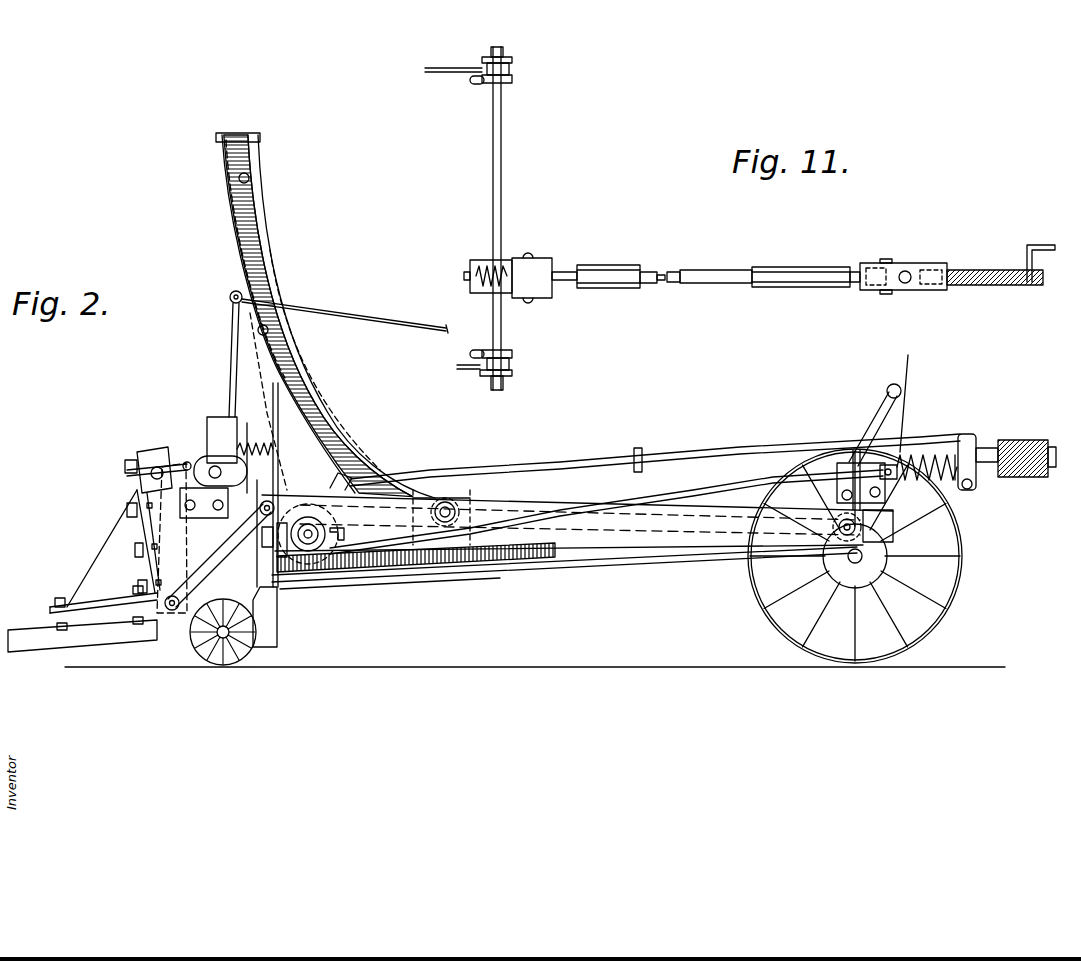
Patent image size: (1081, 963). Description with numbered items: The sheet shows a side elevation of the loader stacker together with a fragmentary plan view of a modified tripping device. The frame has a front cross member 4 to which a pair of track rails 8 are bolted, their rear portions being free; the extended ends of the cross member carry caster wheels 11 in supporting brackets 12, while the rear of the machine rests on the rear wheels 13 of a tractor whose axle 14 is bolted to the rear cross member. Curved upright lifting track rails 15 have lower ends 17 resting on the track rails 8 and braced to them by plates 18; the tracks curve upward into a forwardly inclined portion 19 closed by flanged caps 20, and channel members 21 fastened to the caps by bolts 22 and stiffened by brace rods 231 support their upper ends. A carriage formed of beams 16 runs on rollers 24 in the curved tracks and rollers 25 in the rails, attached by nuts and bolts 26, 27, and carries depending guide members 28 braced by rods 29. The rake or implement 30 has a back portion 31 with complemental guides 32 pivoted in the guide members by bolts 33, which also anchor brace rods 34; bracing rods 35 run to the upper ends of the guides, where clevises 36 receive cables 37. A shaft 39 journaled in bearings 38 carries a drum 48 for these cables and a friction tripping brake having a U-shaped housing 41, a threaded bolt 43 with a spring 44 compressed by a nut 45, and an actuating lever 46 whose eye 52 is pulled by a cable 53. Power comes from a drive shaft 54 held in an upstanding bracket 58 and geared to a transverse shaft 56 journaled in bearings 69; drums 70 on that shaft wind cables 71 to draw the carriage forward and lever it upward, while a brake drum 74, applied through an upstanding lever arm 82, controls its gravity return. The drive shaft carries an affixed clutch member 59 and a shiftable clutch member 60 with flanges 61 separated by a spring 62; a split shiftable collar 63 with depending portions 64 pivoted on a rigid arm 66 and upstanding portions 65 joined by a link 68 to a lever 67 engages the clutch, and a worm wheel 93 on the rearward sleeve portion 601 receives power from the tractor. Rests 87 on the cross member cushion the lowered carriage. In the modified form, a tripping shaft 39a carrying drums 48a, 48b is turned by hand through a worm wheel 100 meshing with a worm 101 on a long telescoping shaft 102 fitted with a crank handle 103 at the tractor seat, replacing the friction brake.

In FIG. 2, the front cross member 4 is at (270, 600).
In FIG. 2, the track rails 8 is at (565, 563).
In FIG. 2, the caster wheels 11 is at (205, 665).
In FIG. 2, the supporting brackets 12 is at (262, 647).
In FIG. 2, the rear wheels 13 is at (938, 627).
In FIG. 2, the axle 14 is at (850, 588).
In FIG. 2, the curved upright lifting track rails 15 is at (270, 213).
In FIG. 2, the carriage members 16 is at (578, 506).
In FIG. 2, the lower ends of track rails 17 is at (290, 393).
In FIG. 2, the plates 18 is at (428, 490).
In FIG. 2, the forwardly inclined portion 19 is at (230, 206).
In FIG. 2, the flanged caps 20 is at (225, 134).
In FIG. 2, the channel members 21 is at (282, 385).
In FIG. 2, the bolts 22 is at (270, 333).
In FIG. 2, the brace rods 231 is at (278, 482).
In FIG. 2, the rollers 24 is at (452, 500).
In FIG. 2, the rollers 25 is at (805, 563).
In FIG. 2, the nuts and bolts 26 is at (455, 505).
In FIG. 2, the nuts and bolts 27 is at (462, 510).
In FIG. 2, the depending guide members 28 is at (163, 556).
In FIG. 2, the brace rods 29 is at (222, 550).
In FIG. 2, the rake or implement 30 is at (20, 633).
In FIG. 2, the back portion 31 is at (150, 478).
In FIG. 2, the complemental guides 32 is at (152, 448).
In FIG. 2, the bolts 33 is at (168, 612).
In FIG. 2, the brace rods 34 is at (337, 562).
In FIG. 2, the bracing rods 35 is at (96, 561).
In FIG. 2, the clevises 36 is at (160, 467).
In FIG. 2, the cables 37 is at (187, 462).
In FIG. 2, the bearings 38 is at (185, 512).
In FIG. 2, the rotatable shaft 39 is at (185, 494).
In FIG. 2, the U-shaped housing 41 is at (228, 417).
In FIG. 2, the threaded bolt 43 is at (275, 450).
In FIG. 2, the spring 44 is at (318, 405).
In FIG. 2, the nut 45 is at (327, 425).
In FIG. 2, the actuating lever 46 is at (232, 346).
In FIG. 2, the drum 48 is at (213, 426).
In FIG. 2, the eye 52 is at (231, 294).
In FIG. 2, the cable 53 is at (435, 325).
In FIG. 2, the drive shaft 54 is at (695, 492).
In FIG. 2, the transverse shaft 56 is at (292, 556).
In FIG. 2, the upstanding bracket 58 is at (840, 470).
In FIG. 2, the affixed clutch member 59 is at (920, 460).
In FIG. 2, the shiftable clutch member 60 is at (935, 458).
In FIG. 2, the sleeve portion 601 is at (990, 450).
In FIG. 2, the flange 61 is at (906, 391).
In FIG. 2, the spring 62 is at (950, 458).
In FIG. 2, the split shiftable collar 63 is at (600, 458).
In FIG. 2, the depending portions 64 is at (637, 446).
In FIG. 2, the upstanding portions 65 is at (967, 440).
In FIG. 2, the rigid arm 66 is at (925, 493).
In FIG. 2, the lever 67 is at (886, 392).
In FIG. 2, the link 68 is at (870, 432).
In FIG. 2, the bearings 69 is at (380, 565).
In FIG. 2, the drums 70 is at (312, 552).
In FIG. 2, the cables 71 is at (627, 562).
In FIG. 2, the brake drum 74 is at (290, 527).
In FIG. 2, the upstanding lever arm 82 is at (345, 475).
In FIG. 2, the rests 87 is at (264, 516).
In FIG. 2, the worm wheel 93 is at (1022, 440).
In FIG. 11, the tripping shaft 39a is at (503, 170).
In FIG. 11, the drum 48a is at (512, 376).
In FIG. 11, the drum 48b is at (512, 80).
In FIG. 11, the worm wheel 100 is at (486, 262).
In FIG. 11, the worm 101 is at (478, 294).
In FIG. 11, the telescoping shaft 102 is at (572, 272).
In FIG. 11, the crank handle 103 is at (1038, 244).